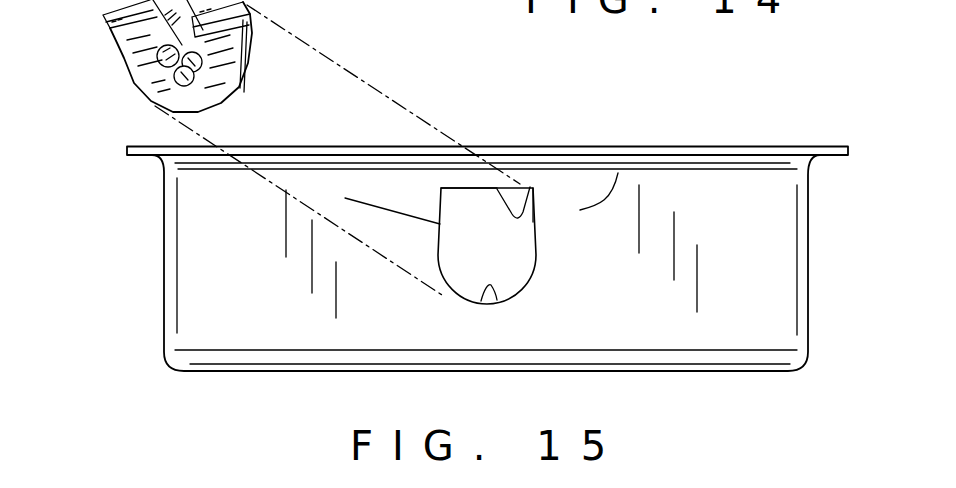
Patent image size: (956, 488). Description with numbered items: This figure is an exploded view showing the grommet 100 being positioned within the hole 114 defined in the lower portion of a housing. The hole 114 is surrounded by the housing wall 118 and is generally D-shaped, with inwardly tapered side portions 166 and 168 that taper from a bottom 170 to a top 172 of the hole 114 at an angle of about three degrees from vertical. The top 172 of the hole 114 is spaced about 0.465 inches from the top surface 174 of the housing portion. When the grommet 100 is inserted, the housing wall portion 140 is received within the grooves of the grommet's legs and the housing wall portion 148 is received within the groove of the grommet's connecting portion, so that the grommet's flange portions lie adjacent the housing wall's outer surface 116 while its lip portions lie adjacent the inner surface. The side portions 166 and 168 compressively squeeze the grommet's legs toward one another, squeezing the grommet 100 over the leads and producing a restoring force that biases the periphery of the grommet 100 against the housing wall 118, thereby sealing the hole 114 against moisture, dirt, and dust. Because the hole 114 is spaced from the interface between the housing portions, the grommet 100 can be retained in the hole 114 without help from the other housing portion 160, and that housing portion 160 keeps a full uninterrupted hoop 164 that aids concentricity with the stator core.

The grommet 100 is at (130, 62).
The hole 114 is at (533, 192).
The outer surface of housing wall 116 is at (653, 320).
The housing wall 118 is at (297, 335).
The housing wall portion 140 is at (529, 190).
The housing wall portion 148 is at (493, 287).
The second housing portion 160 is at (465, 235).
The full uninterrupted hoop 164 is at (127, 153).
The side portion of hole 166 is at (345, 198).
The side portion of hole 168 is at (535, 223).
The bottom of hole 170 is at (465, 298).
The top of hole 172 is at (443, 188).
The top surface of housing portion 174 is at (803, 146).